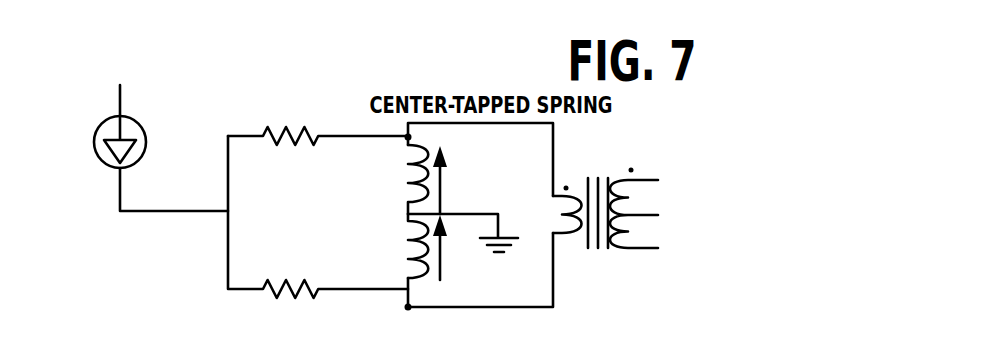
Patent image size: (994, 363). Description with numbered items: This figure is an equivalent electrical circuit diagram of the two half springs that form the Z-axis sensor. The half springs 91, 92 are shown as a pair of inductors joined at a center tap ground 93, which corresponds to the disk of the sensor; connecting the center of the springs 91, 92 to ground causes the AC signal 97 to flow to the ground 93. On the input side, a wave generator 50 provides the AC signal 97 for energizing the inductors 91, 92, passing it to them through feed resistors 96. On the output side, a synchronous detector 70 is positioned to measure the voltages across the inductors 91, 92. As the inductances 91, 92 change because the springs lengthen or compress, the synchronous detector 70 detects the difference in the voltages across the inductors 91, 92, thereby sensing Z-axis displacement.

The wave generator 50 is at (121, 85).
The AC signal 97 is at (206, 192).
The feed resistors 96 is at (303, 147).
The half spring 91 is at (413, 179).
The half spring 92 is at (411, 247).
The center tap ground 93 is at (465, 212).
The synchronous detector 70 is at (712, 217).